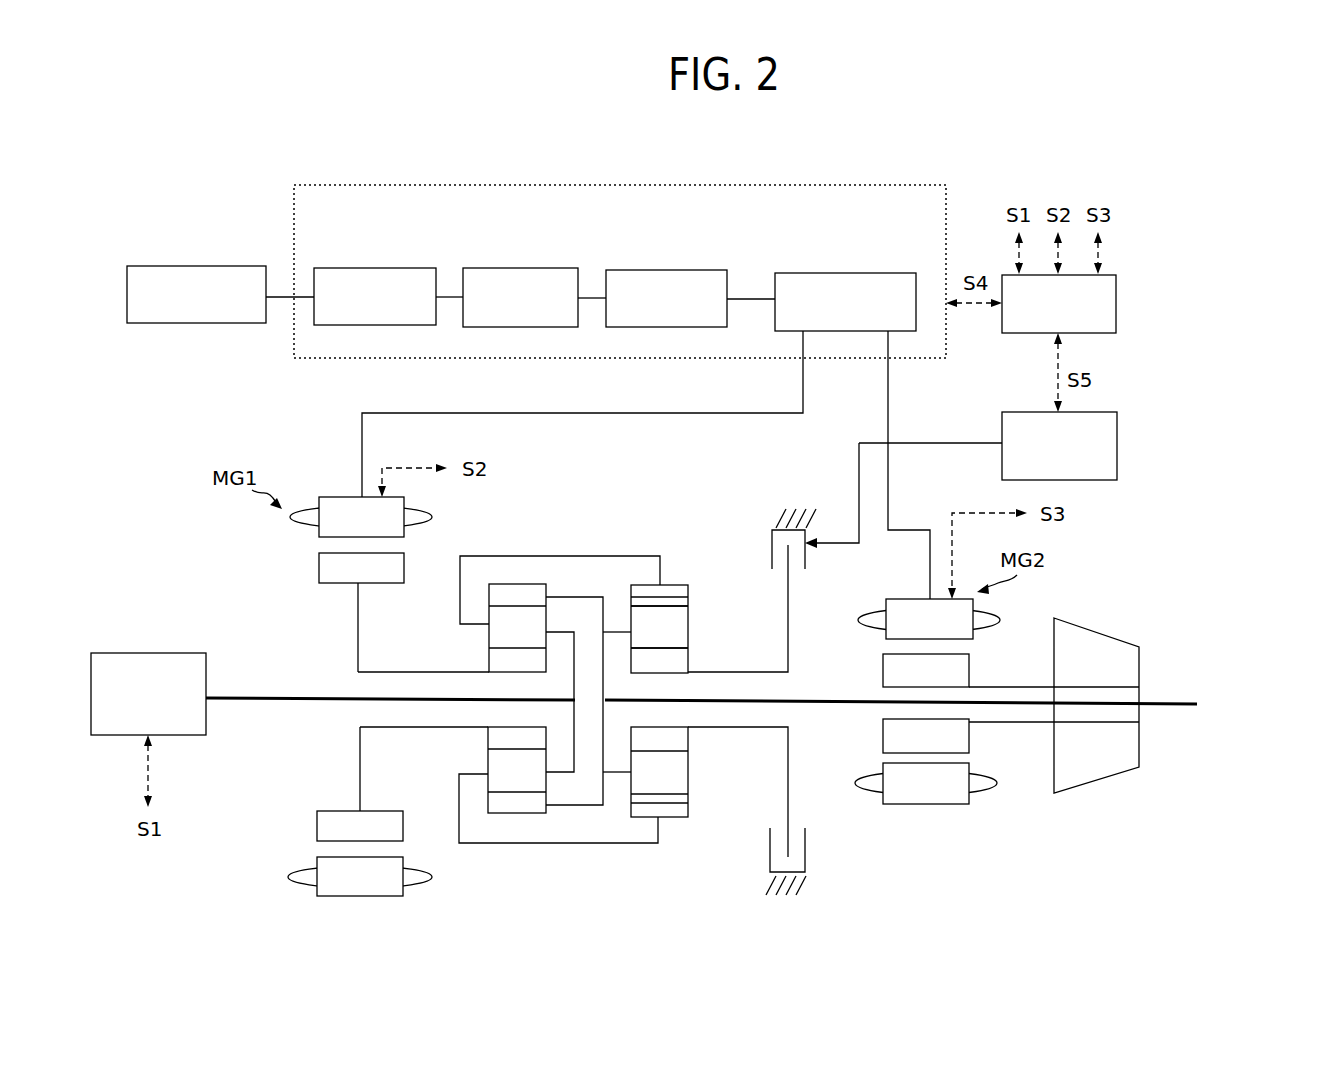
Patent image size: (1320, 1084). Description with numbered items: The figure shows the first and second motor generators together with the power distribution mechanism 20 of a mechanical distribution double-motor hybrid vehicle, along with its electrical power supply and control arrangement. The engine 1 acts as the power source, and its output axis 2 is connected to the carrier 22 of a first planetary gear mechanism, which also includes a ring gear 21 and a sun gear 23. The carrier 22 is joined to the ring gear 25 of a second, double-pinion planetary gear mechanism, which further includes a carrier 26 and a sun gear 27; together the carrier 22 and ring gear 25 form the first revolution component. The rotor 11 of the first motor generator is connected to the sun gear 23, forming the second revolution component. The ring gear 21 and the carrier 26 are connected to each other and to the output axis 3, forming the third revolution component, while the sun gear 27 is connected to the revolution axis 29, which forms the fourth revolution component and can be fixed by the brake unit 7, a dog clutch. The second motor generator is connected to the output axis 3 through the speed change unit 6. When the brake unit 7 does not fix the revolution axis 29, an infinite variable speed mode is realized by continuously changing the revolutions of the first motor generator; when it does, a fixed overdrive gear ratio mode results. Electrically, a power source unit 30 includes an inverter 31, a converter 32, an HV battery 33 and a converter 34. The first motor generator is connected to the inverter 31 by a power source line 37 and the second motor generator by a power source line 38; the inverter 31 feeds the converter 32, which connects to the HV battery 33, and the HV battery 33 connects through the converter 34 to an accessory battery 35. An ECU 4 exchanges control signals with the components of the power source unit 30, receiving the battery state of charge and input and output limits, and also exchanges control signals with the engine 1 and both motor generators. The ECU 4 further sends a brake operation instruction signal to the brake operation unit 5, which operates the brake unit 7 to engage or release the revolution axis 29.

The engine 1 is at (155, 653).
The output axis of the engine 2 is at (250, 699).
The output axis 3 is at (1170, 708).
The ECU 4 is at (1116, 281).
The brake operation unit 5 is at (1117, 444).
The MG2 speed change unit 6 is at (1103, 633).
The brake unit 7 is at (805, 858).
The rotor 11 is at (335, 583).
The power distribution mechanism 20 is at (582, 664).
The ring gear 21 is at (525, 584).
The carrier 22 is at (488, 633).
The sun gear 23 is at (488, 648).
The ring gear 25 is at (668, 585).
The carrier 26 is at (688, 618).
The sun gear 27 is at (688, 656).
The revolution axis 29 is at (760, 672).
The power source unit 30 is at (808, 185).
The inverter 31 is at (865, 273).
The converter 32 is at (685, 270).
The HV battery 33 is at (544, 268).
The converter 34 is at (395, 268).
The accessory battery 35 is at (230, 266).
The power source line 37 is at (705, 414).
The power source line 38 is at (889, 393).